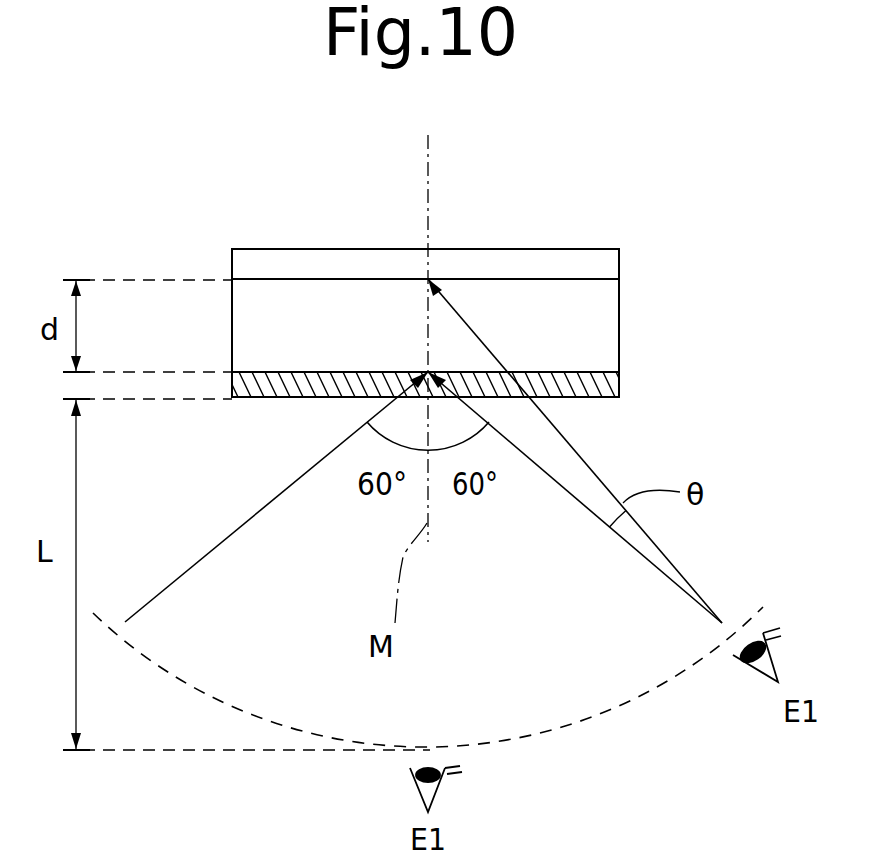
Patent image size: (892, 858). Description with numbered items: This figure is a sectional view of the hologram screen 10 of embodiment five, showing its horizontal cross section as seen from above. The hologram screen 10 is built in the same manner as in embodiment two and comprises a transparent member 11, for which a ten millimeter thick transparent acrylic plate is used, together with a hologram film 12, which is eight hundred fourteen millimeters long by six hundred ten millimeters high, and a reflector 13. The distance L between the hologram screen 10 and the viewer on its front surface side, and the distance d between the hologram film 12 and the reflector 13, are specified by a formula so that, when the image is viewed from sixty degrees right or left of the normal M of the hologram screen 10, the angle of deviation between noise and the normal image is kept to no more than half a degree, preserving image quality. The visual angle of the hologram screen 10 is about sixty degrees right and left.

The hologram screen 10 is at (210, 230).
The transparent member 11 is at (600, 315).
The hologram film 12 is at (605, 377).
The reflector 13 is at (610, 263).